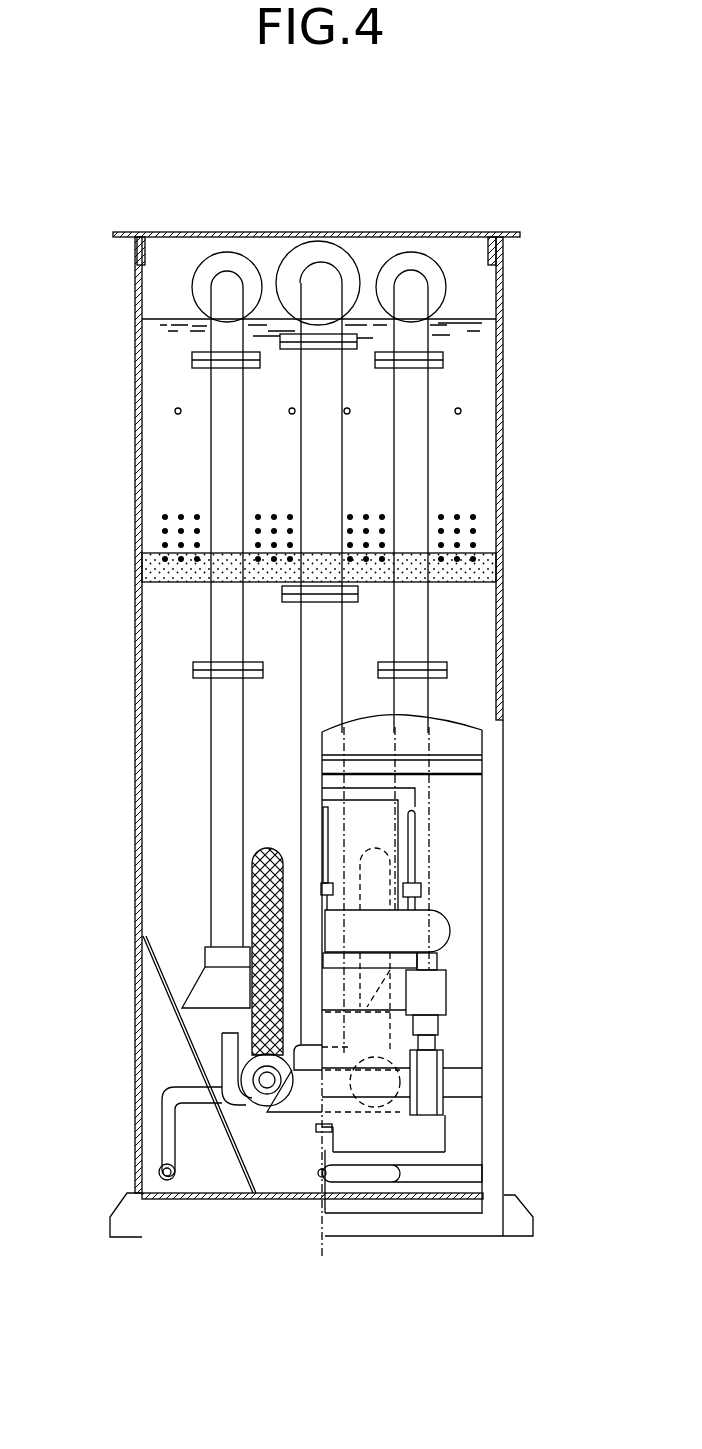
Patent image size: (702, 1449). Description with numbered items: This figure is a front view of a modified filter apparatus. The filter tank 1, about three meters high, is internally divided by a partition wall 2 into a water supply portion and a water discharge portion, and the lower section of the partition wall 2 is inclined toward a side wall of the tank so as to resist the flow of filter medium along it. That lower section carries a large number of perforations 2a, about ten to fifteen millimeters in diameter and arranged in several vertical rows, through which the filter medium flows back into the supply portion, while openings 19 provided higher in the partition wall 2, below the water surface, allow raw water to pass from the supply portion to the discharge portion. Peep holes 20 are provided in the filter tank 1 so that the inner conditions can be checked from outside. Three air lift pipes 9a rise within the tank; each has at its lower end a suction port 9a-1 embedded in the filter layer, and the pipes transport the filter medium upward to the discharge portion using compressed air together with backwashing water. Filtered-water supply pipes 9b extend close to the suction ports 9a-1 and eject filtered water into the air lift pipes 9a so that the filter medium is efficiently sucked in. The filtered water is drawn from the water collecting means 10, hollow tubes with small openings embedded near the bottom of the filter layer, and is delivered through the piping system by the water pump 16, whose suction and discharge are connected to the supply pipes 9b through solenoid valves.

The filter tank 1 is at (524, 404).
The partition wall 2 is at (163, 360).
The openings 19 is at (174, 412).
The perforations 2a is at (164, 545).
The air lift pipe 9a is at (310, 774).
The peep hole 20 is at (365, 818).
The water collecting means 10 is at (377, 863).
The suction port 9a-1 is at (203, 1010).
The filtered-water supply pipe 9b is at (225, 1048).
The water pump 16 is at (432, 1105).